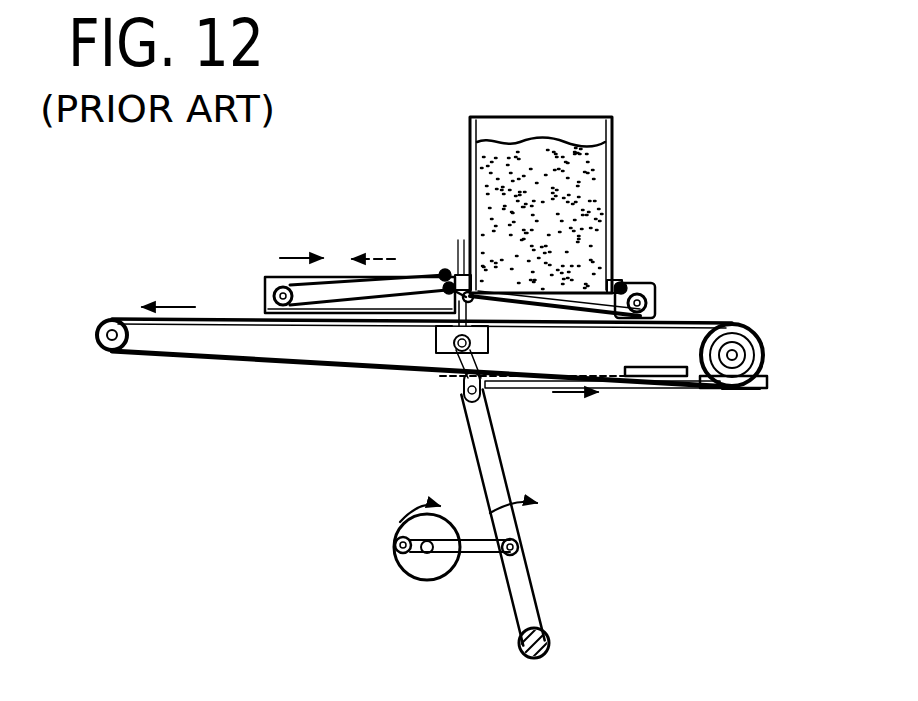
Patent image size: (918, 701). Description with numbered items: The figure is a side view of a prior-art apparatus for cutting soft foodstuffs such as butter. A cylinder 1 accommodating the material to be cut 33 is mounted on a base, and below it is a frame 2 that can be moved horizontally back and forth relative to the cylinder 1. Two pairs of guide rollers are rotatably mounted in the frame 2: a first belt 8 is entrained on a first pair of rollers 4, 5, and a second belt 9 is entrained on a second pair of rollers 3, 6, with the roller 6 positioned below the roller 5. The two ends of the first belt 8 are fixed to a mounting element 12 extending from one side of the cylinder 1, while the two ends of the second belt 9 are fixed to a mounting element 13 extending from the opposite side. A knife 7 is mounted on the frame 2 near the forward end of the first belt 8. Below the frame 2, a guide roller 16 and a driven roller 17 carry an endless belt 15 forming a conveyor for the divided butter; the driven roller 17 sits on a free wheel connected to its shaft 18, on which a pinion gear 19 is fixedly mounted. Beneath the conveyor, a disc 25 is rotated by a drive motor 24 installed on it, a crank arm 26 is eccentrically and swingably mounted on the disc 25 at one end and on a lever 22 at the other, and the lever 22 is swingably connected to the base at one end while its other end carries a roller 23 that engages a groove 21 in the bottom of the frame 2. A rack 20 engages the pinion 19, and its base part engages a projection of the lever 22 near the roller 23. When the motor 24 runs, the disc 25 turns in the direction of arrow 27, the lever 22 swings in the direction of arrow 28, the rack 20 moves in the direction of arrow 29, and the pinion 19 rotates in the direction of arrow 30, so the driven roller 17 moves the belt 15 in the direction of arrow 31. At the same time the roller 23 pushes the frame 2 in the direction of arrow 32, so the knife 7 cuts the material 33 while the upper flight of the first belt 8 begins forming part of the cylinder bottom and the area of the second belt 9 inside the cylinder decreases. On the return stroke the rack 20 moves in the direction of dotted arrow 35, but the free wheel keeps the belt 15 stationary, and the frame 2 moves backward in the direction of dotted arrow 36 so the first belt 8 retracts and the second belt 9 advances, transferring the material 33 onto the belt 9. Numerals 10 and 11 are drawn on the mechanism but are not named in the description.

The cylinder 1 is at (613, 176).
The frame 2 is at (642, 283).
The guide roller 3 is at (656, 303).
The guide roller 4 is at (266, 293).
The guide roller 5 is at (450, 283).
The guide roller 6 is at (478, 302).
The knife 7 is at (446, 270).
The first belt 8 is at (333, 277).
The second belt 9 is at (556, 312).
The link pin 10 is at (442, 274).
The bracket 11 is at (628, 282).
The mounting element 12 is at (463, 275).
The mounting element 13 is at (620, 283).
The endless belt 15 is at (716, 324).
The guide roller 16 is at (112, 318).
The driven roller 17 is at (750, 328).
The shaft 18 is at (768, 380).
The pinion gear 19 is at (740, 355).
The rack 20 is at (700, 392).
The groove 21 is at (437, 350).
The lever 22 is at (492, 458).
The roller 23 is at (464, 388).
The drive motor 24 is at (427, 555).
The disc 25 is at (398, 552).
The crank arm 26 is at (478, 556).
The arrow 27 is at (420, 510).
The arrow 28 is at (480, 515).
The arrow 29 is at (577, 395).
The arrow 30 is at (740, 392).
The arrow 31 is at (173, 305).
The arrow 32 is at (292, 256).
The material to be cut 33 is at (553, 140).
The dotted arrow 35 is at (613, 388).
The dotted arrow 36 is at (367, 257).